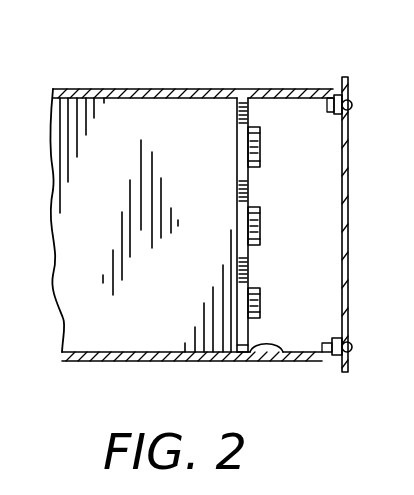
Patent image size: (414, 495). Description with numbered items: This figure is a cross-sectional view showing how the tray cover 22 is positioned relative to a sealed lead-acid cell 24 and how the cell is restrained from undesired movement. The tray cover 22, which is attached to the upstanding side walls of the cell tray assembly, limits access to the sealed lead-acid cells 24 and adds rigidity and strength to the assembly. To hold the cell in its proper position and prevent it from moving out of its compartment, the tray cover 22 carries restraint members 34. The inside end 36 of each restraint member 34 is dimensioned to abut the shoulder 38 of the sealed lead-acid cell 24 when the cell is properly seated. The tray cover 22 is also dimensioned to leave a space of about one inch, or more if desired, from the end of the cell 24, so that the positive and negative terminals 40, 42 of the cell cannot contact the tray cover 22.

The tray cover 22 is at (348, 127).
The sealed lead-acid cell 24 is at (212, 137).
The restraint member 34 is at (296, 100).
The inside end 36 is at (218, 96).
The shoulder 38 is at (288, 362).
The positive terminal 40 is at (260, 147).
The negative terminal 42 is at (260, 300).